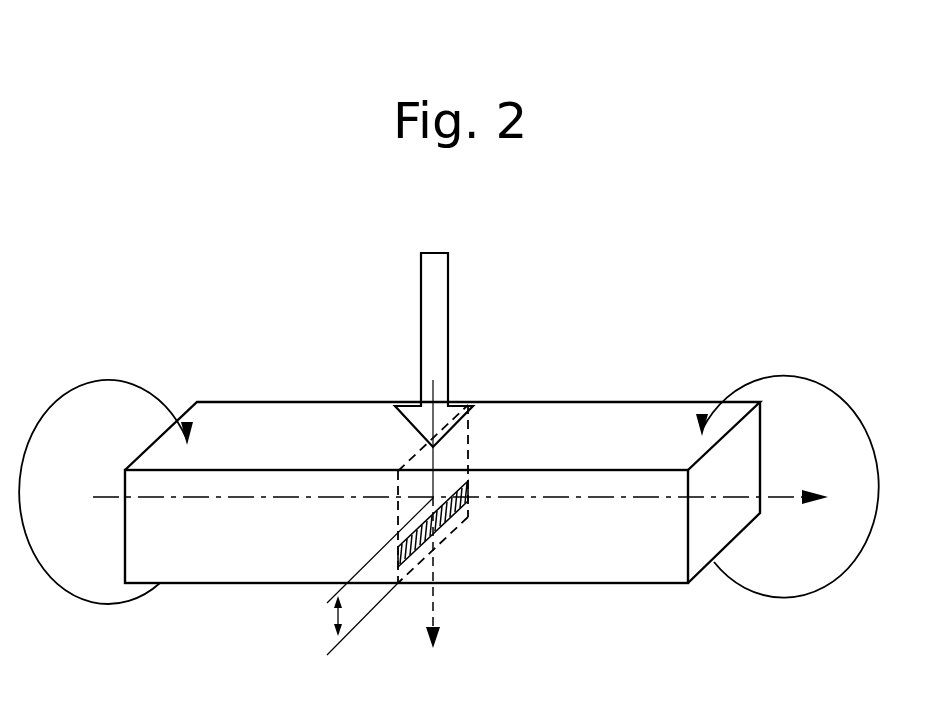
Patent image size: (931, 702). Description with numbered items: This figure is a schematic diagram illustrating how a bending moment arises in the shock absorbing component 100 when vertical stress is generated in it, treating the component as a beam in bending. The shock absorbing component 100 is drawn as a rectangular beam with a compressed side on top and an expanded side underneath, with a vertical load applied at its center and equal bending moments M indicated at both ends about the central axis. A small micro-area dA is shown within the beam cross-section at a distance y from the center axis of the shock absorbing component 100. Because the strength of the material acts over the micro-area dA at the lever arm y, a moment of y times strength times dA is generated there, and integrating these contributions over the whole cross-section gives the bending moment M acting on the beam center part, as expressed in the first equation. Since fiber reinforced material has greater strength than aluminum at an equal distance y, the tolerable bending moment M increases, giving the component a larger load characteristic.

The shock absorbing component 100 is at (247, 402).
The bending moment M is at (449, 467).
The applied force F is at (434, 326).
The micro-area dA is at (458, 505).
The distance from the center axis y is at (380, 576).